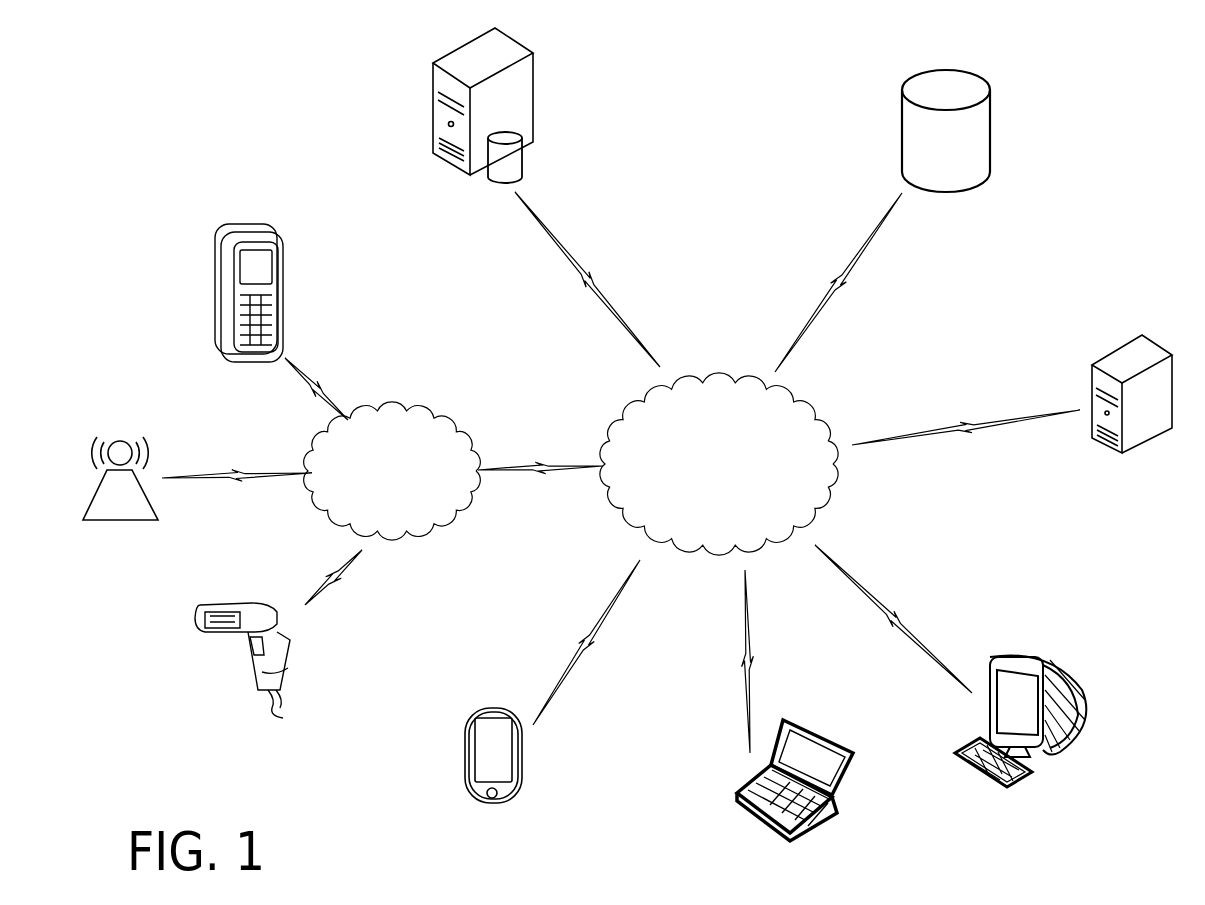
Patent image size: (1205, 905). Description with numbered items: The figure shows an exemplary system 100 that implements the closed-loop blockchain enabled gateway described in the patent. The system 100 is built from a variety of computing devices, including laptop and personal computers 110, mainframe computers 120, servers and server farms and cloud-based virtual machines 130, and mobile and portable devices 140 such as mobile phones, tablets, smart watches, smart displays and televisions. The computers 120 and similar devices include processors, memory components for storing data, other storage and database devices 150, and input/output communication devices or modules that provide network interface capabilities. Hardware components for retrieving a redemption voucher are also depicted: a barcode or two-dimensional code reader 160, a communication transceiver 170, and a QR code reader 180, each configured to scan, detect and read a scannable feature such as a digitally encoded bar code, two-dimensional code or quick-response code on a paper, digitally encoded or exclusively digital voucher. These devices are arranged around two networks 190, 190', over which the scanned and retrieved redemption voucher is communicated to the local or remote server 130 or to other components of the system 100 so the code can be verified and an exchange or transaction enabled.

The system 100 is at (255, 130).
The laptop and personal computers 110 is at (750, 815).
The mainframe computers 120 is at (1035, 658).
The servers and server farms and cloud-based virtual machines 130 is at (432, 83).
The mobile and portable devices 140 is at (468, 737).
The storage and database devices 150 is at (523, 163).
The 2D code reader 160 is at (202, 617).
The communication transceiver 170 is at (148, 503).
The QR code reader 180 is at (223, 303).
The network 190 is at (759, 453).
The network 190' is at (426, 448).